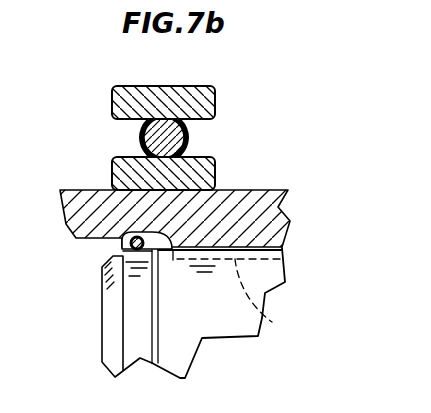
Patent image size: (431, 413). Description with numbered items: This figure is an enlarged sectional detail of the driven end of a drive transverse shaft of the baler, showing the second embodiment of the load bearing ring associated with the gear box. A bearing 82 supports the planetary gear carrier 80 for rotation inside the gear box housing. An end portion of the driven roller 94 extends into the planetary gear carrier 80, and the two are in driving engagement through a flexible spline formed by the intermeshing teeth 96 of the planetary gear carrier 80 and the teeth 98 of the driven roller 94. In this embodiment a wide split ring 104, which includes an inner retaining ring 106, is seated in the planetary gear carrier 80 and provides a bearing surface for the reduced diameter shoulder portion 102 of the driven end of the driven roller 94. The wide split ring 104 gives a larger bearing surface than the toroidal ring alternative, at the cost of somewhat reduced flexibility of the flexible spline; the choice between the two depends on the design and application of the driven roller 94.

The bearing 82 is at (203, 107).
The planetary gear carrier 80 is at (232, 198).
The driven roller 94 is at (213, 330).
The teeth of the planetary gear carrier 96 is at (272, 322).
The teeth of the driven roller 98 is at (282, 256).
The reduced diameter shoulder portion 102 is at (133, 322).
The wide split ring 104 is at (123, 247).
The inner retaining ring 106 is at (120, 253).